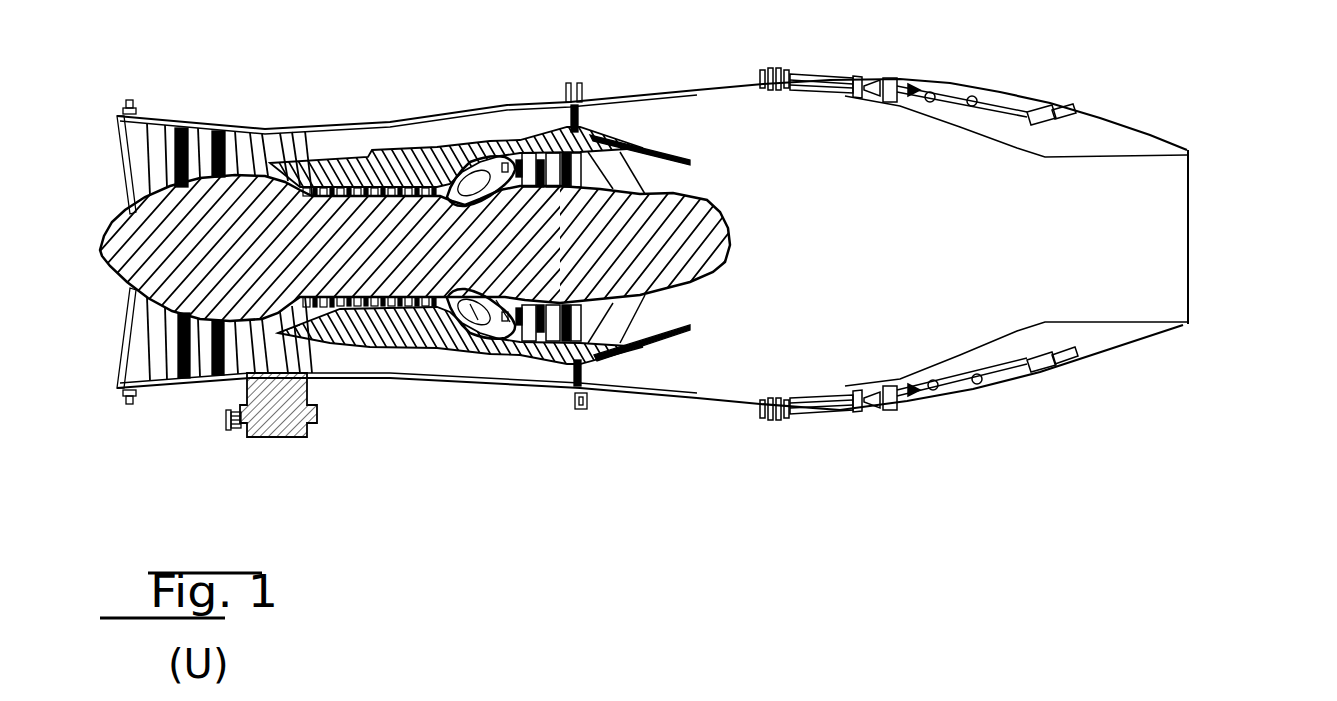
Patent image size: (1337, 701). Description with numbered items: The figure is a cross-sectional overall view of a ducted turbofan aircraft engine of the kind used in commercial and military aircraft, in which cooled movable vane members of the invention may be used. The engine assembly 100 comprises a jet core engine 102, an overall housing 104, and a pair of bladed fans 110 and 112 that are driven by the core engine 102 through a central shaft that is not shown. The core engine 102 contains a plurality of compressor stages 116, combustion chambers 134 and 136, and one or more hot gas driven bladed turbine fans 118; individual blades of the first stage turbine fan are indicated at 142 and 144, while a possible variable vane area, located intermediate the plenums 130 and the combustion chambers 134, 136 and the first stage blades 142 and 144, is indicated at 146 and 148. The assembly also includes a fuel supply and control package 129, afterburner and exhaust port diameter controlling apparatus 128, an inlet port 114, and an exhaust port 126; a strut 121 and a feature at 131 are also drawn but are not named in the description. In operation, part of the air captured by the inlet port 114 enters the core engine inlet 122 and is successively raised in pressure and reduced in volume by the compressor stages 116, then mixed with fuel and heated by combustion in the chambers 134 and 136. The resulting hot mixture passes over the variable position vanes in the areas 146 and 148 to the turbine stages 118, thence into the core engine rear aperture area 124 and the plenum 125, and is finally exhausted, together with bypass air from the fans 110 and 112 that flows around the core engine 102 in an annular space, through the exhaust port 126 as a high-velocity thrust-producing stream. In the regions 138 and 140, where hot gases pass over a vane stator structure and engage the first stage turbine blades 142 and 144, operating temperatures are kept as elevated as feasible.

The engine assembly 100 is at (485, 462).
The jet core engine 102 is at (487, 258).
The overall housing 104 is at (392, 121).
The bladed fan 110 is at (175, 128).
The bladed fan 112 is at (216, 128).
The inlet port 114 is at (108, 337).
The compressor stages 116 is at (450, 350).
The turbine fans 118 is at (573, 365).
The support strut 121 is at (588, 125).
The core engine inlet 122 is at (273, 333).
The core engine rear aperture area 124 is at (692, 183).
The plenum 125 is at (925, 252).
The exhaust port 126 is at (1204, 287).
The afterburner and exhaust port diameter controlling apparatus 128 is at (930, 418).
The fuel supply and control package 129 is at (262, 440).
The plenums 130 is at (440, 158).
The rotor tail cone 131 is at (713, 286).
The combustion chamber 134 is at (470, 180).
The combustion chamber 136 is at (480, 330).
The region 138 is at (506, 186).
The region 140 is at (514, 302).
The first stage turbine blade 142 is at (516, 164).
The first stage turbine blade 144 is at (516, 337).
The variable vane area 146 is at (506, 160).
The variable vane area 148 is at (489, 338).